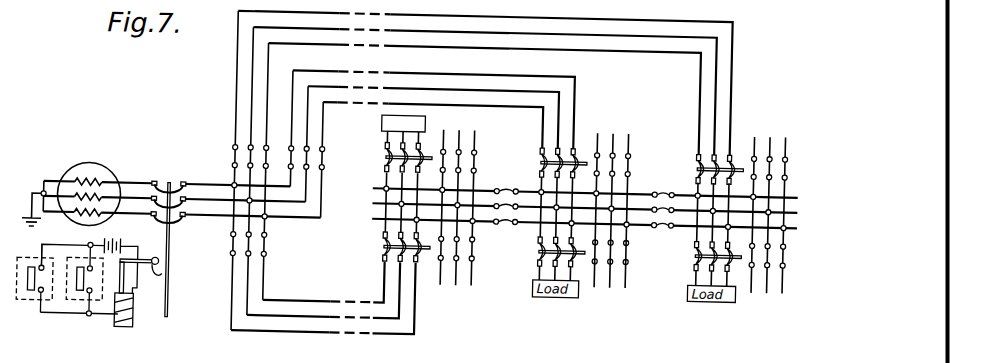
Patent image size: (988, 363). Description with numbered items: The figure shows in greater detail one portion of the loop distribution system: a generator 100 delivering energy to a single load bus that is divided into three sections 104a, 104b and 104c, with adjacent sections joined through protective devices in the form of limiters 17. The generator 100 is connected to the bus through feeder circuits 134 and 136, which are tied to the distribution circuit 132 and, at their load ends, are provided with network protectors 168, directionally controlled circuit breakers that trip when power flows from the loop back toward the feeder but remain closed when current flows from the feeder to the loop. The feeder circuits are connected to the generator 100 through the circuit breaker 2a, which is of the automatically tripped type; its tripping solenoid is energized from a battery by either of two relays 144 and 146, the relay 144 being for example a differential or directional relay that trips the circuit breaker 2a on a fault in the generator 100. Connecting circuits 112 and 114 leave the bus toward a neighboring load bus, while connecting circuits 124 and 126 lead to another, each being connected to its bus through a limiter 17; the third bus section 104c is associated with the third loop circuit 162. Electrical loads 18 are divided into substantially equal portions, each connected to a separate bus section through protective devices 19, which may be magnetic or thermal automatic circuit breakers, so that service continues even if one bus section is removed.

The generator 100 is at (96, 165).
The circuit breaker 2a is at (168, 189).
The limiter 17 is at (290, 162).
The electrical loads 18 is at (380, 126).
The protective devices 19 is at (385, 160).
The connecting circuit 112 is at (474, 146).
The connecting circuit 114 is at (628, 137).
The connecting circuit 124 is at (628, 284).
The connecting circuit 126 is at (476, 276).
The distribution circuit 132 is at (452, 17).
The feeder circuit 134 is at (495, 68).
The feeder circuit 136 is at (316, 305).
The relay 144 is at (26, 311).
The relay 146 is at (78, 312).
The third loop circuit 162 is at (792, 313).
The network protector 168 is at (541, 164).
The load bus section 104a is at (484, 223).
The load bus section 104b is at (641, 191).
The third load bus section 104c is at (681, 223).